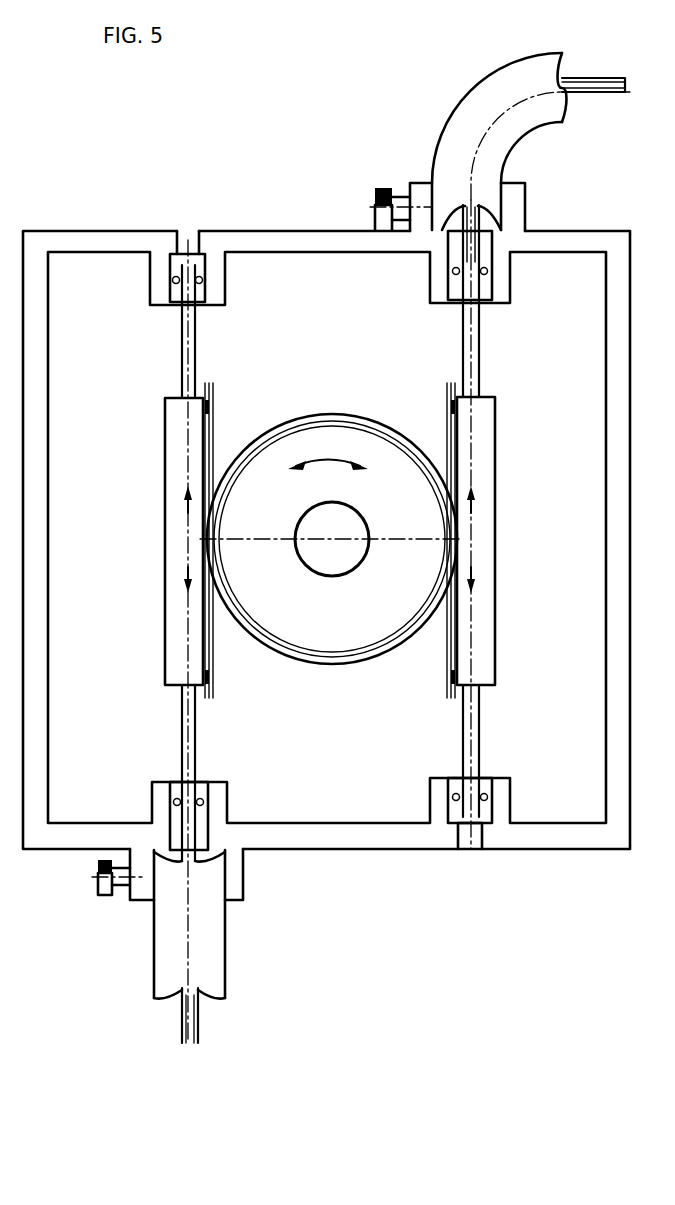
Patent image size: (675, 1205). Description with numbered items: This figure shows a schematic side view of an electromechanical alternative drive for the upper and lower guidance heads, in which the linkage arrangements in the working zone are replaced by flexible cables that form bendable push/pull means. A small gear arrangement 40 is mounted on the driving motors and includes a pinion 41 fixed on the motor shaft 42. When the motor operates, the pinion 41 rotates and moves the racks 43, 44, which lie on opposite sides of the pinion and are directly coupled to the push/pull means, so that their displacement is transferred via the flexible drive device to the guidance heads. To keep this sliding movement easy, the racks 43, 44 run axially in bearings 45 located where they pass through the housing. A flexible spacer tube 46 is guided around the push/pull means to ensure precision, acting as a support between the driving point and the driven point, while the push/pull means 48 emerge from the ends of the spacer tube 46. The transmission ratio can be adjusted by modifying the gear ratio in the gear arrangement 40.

The gear arrangement 40 is at (281, 247).
The pinion 41 is at (337, 648).
The motor shaft 42 is at (333, 562).
The rack 43 is at (496, 428).
The rack 44 is at (170, 428).
The bearing 45 is at (172, 273).
The flexible spacer tube 46 is at (485, 93).
The tube 48 is at (595, 86).